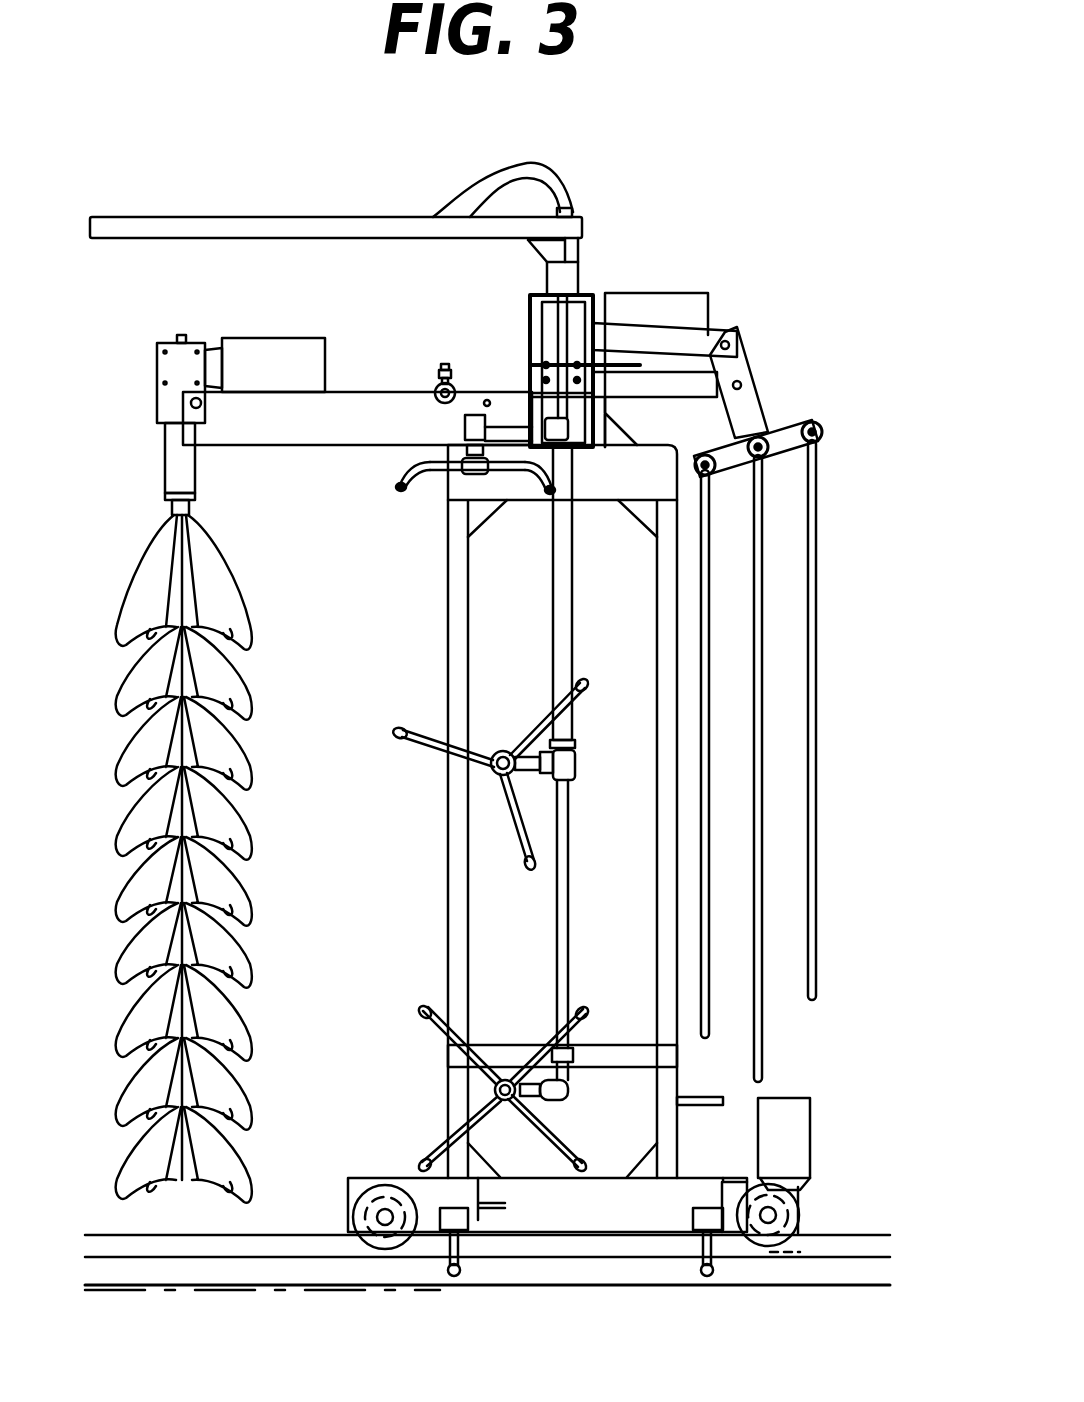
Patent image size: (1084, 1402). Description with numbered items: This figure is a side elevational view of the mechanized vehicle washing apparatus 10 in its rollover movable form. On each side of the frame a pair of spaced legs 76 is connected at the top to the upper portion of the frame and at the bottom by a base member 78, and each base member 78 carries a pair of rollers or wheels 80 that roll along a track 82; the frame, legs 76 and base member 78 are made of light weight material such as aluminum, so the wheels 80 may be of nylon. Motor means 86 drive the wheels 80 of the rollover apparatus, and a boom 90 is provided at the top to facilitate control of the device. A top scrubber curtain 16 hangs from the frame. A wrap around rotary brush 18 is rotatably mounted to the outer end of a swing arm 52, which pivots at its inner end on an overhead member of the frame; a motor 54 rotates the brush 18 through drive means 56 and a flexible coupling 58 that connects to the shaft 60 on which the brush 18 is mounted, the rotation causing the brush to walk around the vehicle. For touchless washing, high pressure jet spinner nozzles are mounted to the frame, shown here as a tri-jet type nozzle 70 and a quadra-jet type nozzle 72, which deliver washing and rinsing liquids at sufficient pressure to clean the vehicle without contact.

The mechanized vehicle washing apparatus 10 is at (784, 249).
The top scrubber curtain 16 is at (820, 798).
The wrap around rotary brush 18 is at (125, 685).
The swing arm 52 is at (375, 402).
The motor 54 is at (290, 345).
The drive means 56 is at (160, 416).
The flexible coupling 58 is at (187, 480).
The shaft 60 is at (172, 507).
The tri-jet spinner nozzle 70 is at (430, 742).
The quadra-jet spinner nozzle 72 is at (450, 1055).
The legs 76 is at (460, 895).
The base member 78 is at (562, 1222).
The wheels 80 is at (352, 1203).
The track 82 is at (880, 1246).
The motor means 86 is at (798, 1145).
The boom 90 is at (249, 214).